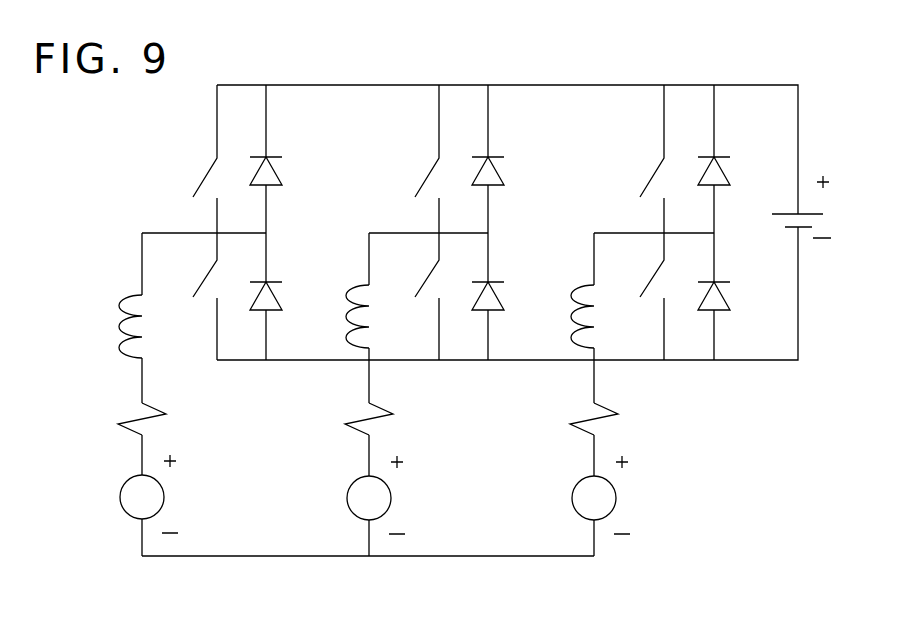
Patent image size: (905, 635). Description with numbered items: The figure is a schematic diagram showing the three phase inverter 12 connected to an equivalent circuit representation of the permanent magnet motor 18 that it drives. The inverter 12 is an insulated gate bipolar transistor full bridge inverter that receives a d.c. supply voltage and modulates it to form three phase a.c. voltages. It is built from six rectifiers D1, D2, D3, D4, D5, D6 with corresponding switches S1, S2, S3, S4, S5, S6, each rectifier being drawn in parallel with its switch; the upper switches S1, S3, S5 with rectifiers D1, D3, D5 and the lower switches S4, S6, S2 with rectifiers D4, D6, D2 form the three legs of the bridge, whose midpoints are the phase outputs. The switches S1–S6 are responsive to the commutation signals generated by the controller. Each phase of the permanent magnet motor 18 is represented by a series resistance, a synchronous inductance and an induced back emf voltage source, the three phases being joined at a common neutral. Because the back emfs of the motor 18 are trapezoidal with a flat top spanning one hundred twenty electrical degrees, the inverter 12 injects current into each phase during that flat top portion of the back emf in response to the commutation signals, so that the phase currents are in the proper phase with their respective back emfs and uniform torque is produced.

The three phase inverter 12 is at (603, 74).
The permanent magnet motor 18 is at (433, 569).
The switch S1 is at (187, 159).
The switch S2 is at (636, 296).
The switch S3 is at (408, 159).
The switch S4 is at (192, 296).
The switch S5 is at (636, 159).
The switch S6 is at (413, 296).
The rectifier D1 is at (292, 177).
The rectifier D2 is at (737, 308).
The rectifier D3 is at (514, 177).
The rectifier D4 is at (292, 290).
The rectifier D5 is at (738, 162).
The rectifier D6 is at (514, 290).